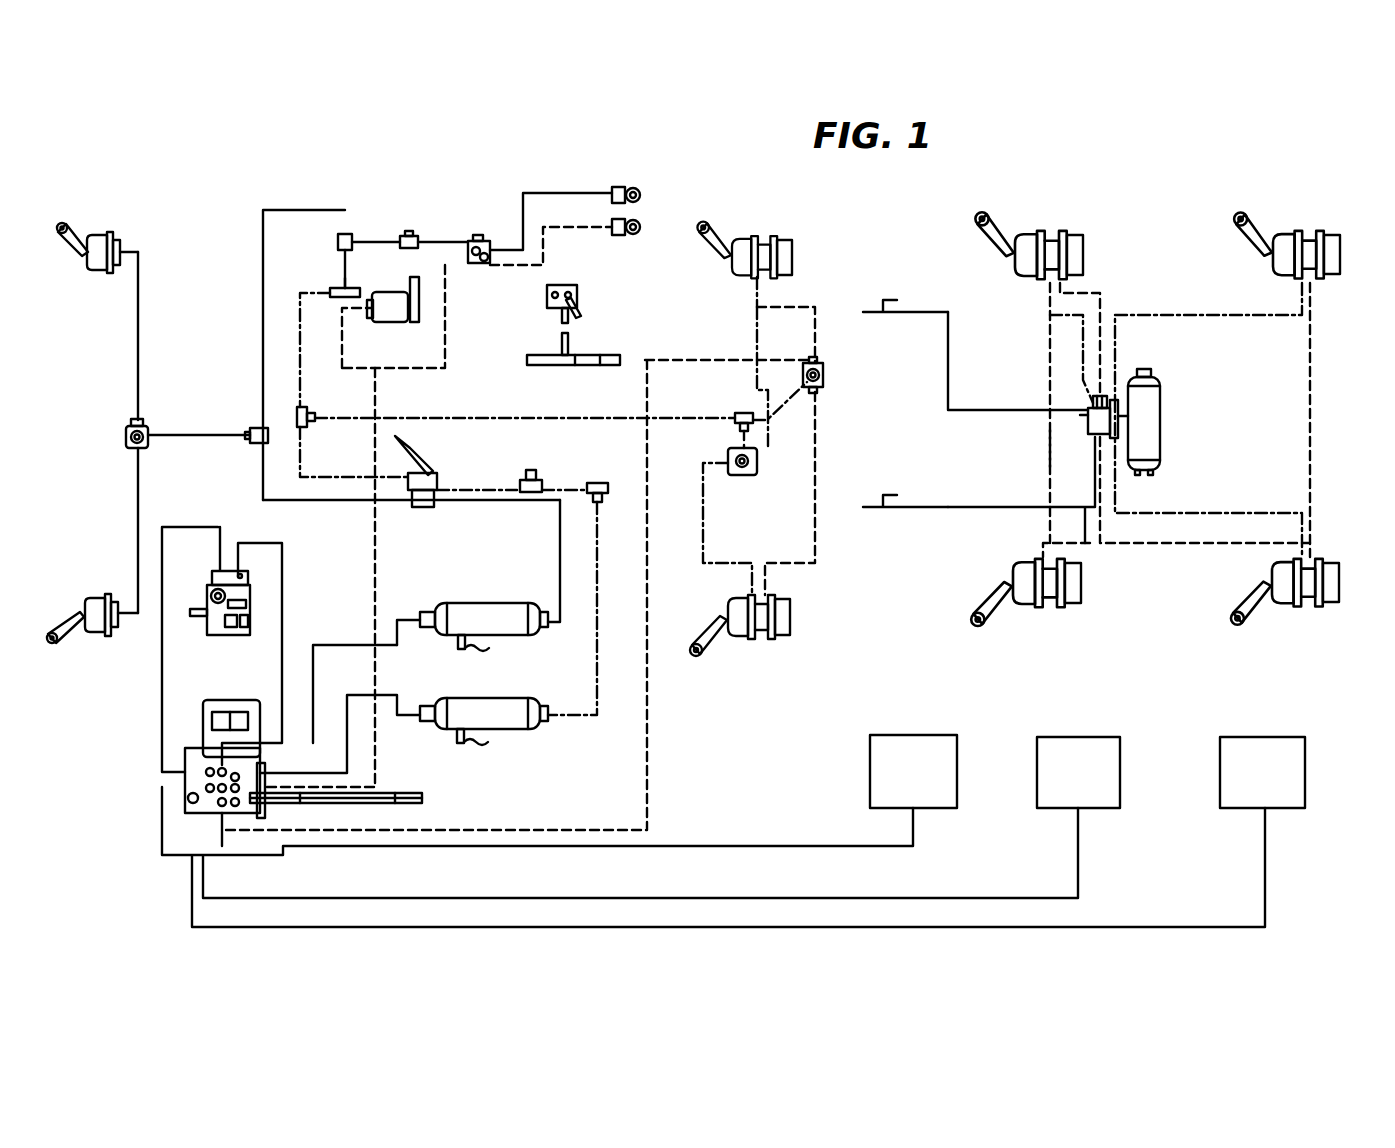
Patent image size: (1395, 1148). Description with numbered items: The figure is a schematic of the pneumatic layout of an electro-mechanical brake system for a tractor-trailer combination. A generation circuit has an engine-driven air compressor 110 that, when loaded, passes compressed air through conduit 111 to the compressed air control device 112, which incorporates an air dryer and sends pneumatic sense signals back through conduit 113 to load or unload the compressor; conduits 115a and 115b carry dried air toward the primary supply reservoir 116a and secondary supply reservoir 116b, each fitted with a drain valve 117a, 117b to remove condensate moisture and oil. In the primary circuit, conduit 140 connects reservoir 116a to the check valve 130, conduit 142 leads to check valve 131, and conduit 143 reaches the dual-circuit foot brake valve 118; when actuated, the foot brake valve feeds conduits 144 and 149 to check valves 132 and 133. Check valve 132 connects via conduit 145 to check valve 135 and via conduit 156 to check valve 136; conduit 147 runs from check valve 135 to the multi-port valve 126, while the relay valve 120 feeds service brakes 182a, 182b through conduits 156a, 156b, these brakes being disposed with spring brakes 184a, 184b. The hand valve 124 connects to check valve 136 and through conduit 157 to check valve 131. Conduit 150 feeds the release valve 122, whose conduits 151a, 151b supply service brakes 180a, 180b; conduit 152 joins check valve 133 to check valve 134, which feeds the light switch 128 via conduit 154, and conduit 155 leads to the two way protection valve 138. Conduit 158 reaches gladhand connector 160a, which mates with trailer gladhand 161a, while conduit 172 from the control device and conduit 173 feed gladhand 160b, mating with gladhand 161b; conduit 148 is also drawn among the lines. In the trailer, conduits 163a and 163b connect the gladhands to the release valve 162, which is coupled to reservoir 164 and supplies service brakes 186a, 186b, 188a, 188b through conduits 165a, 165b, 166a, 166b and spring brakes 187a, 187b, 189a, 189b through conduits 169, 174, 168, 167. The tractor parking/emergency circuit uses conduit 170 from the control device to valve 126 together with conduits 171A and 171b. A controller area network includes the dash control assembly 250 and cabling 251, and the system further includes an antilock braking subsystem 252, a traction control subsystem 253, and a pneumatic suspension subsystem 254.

The air compressor 110 is at (222, 640).
The conduit 111 is at (285, 605).
The compressed air control device 112 is at (198, 712).
The conduit 113 is at (160, 630).
The conduit 115a is at (345, 730).
The conduit 115b is at (315, 640).
The primary supply reservoir 116a is at (510, 729).
The secondary supply reservoir 116b is at (465, 603).
The drain valve 117a is at (457, 745).
The drain valve 117b is at (458, 648).
The foot brake valve 118 is at (425, 465).
The relay valve 120 is at (755, 476).
The release valve 122 is at (148, 425).
The hand valve 124 is at (410, 322).
The multi-port valve 126 is at (825, 370).
The light switch 128 is at (412, 236).
The check valve 130 is at (600, 500).
The check valve 131 is at (537, 483).
The check valve 132 is at (308, 427).
The check valve 133 is at (252, 432).
The check valve 134 is at (350, 236).
The check valve 135 is at (740, 412).
The check valve 136 is at (347, 288).
The two way protection valve 138 is at (484, 238).
The conduit 140 is at (595, 660).
The conduit 142 is at (608, 466).
The conduit 143 is at (452, 490).
The conduit 144 is at (305, 470).
The conduit 145 is at (600, 418).
The conduit 147 is at (795, 400).
The line 148 is at (558, 545).
The conduit 149 is at (290, 502).
The conduit 150 is at (178, 440).
The conduit 151a is at (140, 525).
The conduit 151b is at (140, 345).
The conduit 152 is at (328, 208).
The conduit 154 is at (372, 240).
The conduit 155 is at (445, 242).
The conduit 156 is at (298, 305).
The conduit 156a is at (752, 340).
The conduit 156b is at (708, 548).
The conduit 157 is at (393, 316).
The conduit 158 is at (545, 192).
The gladhand connector 160a is at (641, 190).
The gladhand connector 160b is at (645, 228).
The gladhand connector 161a is at (886, 300).
The gladhand connector 161b is at (895, 497).
The release valve 162 is at (1107, 400).
The conduit 163a is at (950, 395).
The conduit 163b is at (938, 510).
The reservoir 164 is at (1162, 410).
The conduit 165a is at (1080, 318).
The conduit 165b is at (1090, 548).
The conduit 166a is at (1135, 316).
The conduit 166b is at (1185, 513).
The conduit 167 is at (1140, 548).
The conduit 168 is at (1300, 405).
The conduit 169 is at (1105, 305).
The conduit 170 is at (650, 790).
The conduit 171A is at (815, 345).
The conduit 171b is at (818, 500).
The conduit 172 is at (378, 580).
The conduit 173 is at (568, 232).
The conduit 174 is at (1048, 442).
The service brake 180a is at (95, 593).
The service brake 180b is at (110, 230).
The service brake 182a is at (788, 231).
The service brake 182b is at (774, 647).
The spring brake 184a is at (795, 250).
The spring brake 184b is at (785, 640).
The service brake 186a is at (1065, 211).
The service brake 186b is at (1053, 620).
The spring brake 187a is at (1083, 235).
The spring brake 187b is at (1072, 612).
The service brake 188a is at (1308, 218).
The service brake 188b is at (1301, 635).
The spring brake 189a is at (1334, 245).
The spring brake 189b is at (1330, 612).
The dash control assembly 250 is at (547, 295).
The cabling 251 is at (596, 356).
The antilock braking system subsystem 252 is at (938, 786).
The traction control subsystem 253 is at (1103, 786).
The pneumatic suspension subsystem 254 is at (1288, 786).